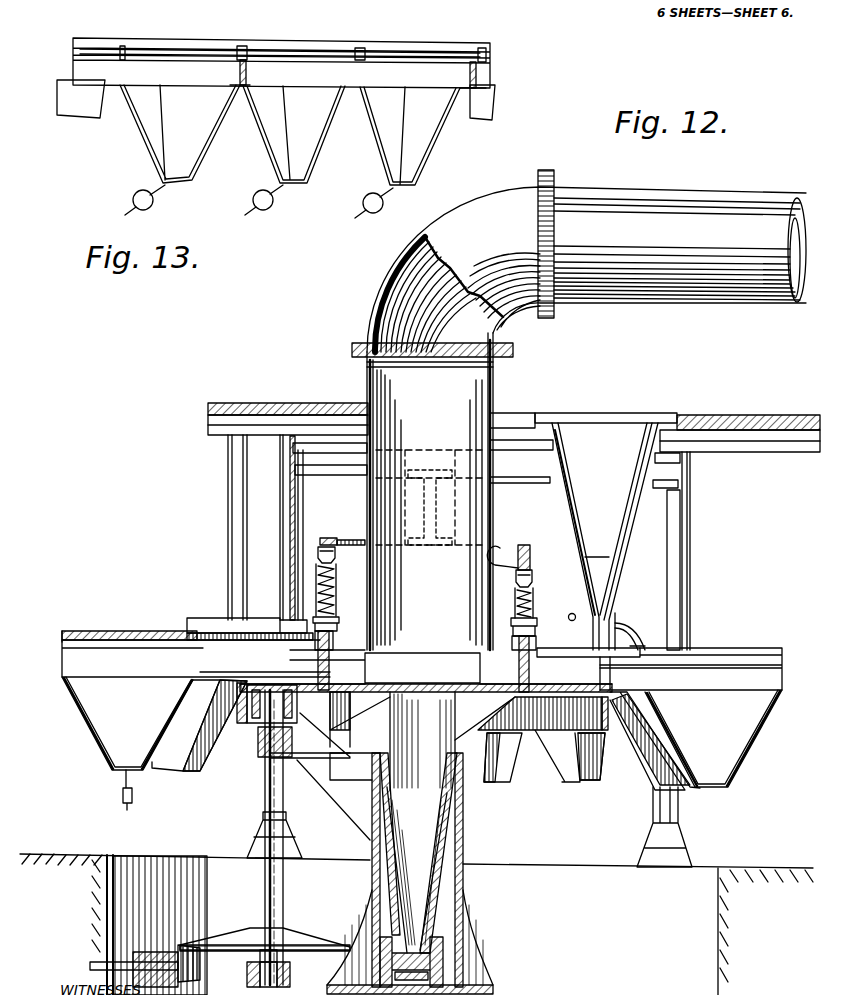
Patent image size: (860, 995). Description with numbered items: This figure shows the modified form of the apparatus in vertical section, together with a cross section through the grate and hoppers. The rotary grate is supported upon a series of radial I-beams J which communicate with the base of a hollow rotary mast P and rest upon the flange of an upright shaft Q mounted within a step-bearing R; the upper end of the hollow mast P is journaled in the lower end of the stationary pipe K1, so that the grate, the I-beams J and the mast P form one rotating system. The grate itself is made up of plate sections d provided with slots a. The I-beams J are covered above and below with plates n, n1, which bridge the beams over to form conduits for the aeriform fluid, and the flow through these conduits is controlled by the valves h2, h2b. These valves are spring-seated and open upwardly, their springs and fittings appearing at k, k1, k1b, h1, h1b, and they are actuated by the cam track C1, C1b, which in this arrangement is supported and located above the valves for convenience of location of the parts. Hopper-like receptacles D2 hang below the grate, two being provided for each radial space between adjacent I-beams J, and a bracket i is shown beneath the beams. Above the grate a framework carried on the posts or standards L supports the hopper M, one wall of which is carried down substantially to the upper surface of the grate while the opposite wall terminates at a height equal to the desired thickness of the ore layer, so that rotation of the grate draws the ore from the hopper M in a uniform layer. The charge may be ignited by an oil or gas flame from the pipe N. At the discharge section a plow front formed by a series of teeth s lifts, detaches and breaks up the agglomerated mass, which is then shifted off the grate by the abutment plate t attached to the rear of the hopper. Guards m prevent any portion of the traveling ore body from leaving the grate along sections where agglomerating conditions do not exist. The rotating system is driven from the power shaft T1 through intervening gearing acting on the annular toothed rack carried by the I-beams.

In FIG. 13, the slots a is at (250, 45).
In FIG. 12, the slots a is at (691, 657).
In FIG. 13, the radial I-beams J is at (245, 90).
In FIG. 12, the radial I-beams J is at (337, 666).
In FIG. 13, the hopper-like receptacles D2 is at (385, 160).
In FIG. 12, the hopper-like receptacles D2 is at (75, 693).
In FIG. 12, the stationary pipe K1 is at (586, 261).
In FIG. 12, the hollow rotary mast P is at (401, 508).
In FIG. 12, the hopper M is at (655, 531).
In FIG. 12, the guards m is at (262, 625).
In FIG. 12, the cam track C1 is at (328, 538).
In FIG. 12, the cam track C1b is at (528, 545).
In FIG. 12, the spring block k is at (532, 565).
In FIG. 12, the spring k1 is at (320, 596).
In FIG. 12, the spring base k1b is at (513, 620).
In FIG. 12, the collar h1 is at (336, 552).
In FIG. 12, the spring h1b is at (536, 590).
In FIG. 12, the valves h2 is at (338, 640).
In FIG. 12, the valves h2b is at (516, 668).
In FIG. 12, the pipe N is at (569, 616).
In FIG. 12, the abutment plate t is at (628, 625).
In FIG. 12, the teeth s is at (642, 631).
In FIG. 12, the plates n is at (572, 640).
In FIG. 12, the plates n1 is at (204, 688).
In FIG. 12, the plate sections d is at (120, 632).
In FIG. 12, the bracket i is at (263, 775).
In FIG. 12, the bevel gear shaft T1 is at (133, 950).
In FIG. 12, the upright shaft Q is at (469, 741).
In FIG. 12, the posts or standards L is at (538, 732).
In FIG. 12, the step-bearing R is at (443, 950).